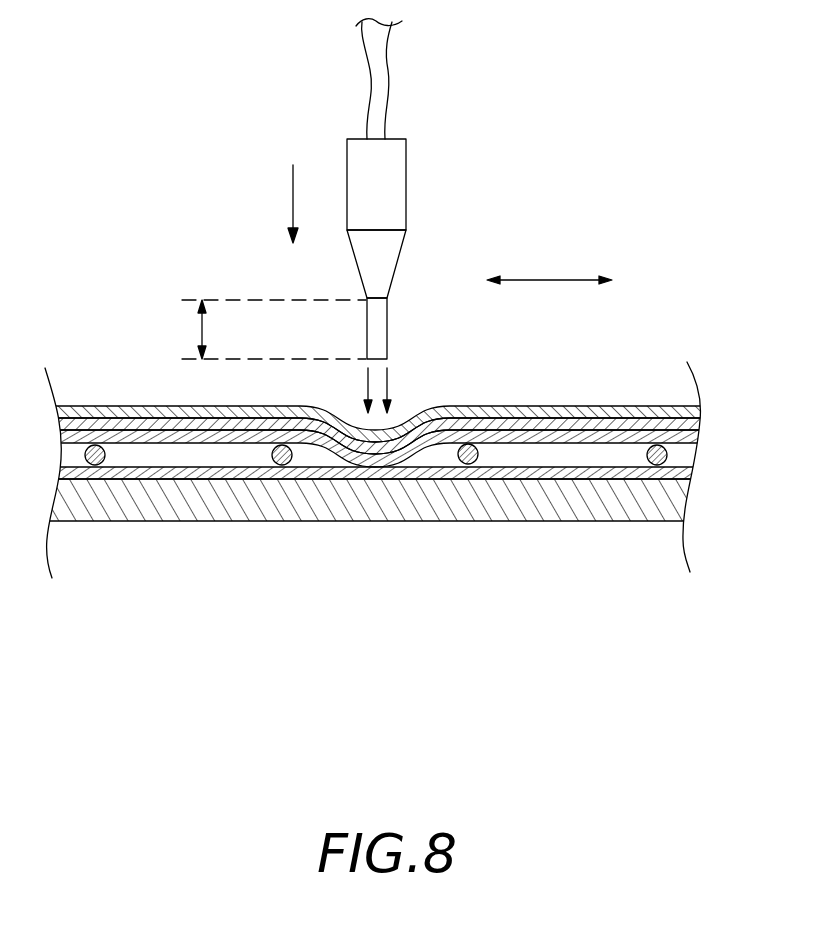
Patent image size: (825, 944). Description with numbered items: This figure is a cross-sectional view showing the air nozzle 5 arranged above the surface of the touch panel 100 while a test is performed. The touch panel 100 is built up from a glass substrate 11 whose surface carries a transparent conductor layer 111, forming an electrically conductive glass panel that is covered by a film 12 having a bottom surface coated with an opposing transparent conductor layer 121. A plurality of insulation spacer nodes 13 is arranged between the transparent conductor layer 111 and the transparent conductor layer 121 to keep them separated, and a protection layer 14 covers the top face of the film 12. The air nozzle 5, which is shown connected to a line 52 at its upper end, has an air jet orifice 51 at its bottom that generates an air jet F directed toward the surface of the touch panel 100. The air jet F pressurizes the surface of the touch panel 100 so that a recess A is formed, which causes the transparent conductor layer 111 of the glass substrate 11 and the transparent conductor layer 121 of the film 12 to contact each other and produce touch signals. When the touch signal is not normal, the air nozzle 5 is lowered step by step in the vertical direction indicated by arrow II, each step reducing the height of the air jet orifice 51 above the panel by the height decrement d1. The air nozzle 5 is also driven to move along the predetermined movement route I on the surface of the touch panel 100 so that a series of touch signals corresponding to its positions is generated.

The touch panel 100 is at (726, 283).
The glass substrate 11 is at (686, 497).
The transparent conductor layer 111 is at (690, 474).
The film 12 is at (700, 426).
The transparent conductor layer 121 is at (700, 440).
The insulation spacer nodes 13 is at (668, 450).
The protection layer 14 is at (700, 410).
The air nozzle 5 is at (383, 175).
The air jet orifice 51 is at (368, 326).
The cable 52 is at (383, 76).
The height decrement d1 is at (200, 330).
The recess A is at (360, 424).
The air jet F is at (388, 373).
The movement route I is at (548, 280).
The arrow II is at (292, 190).